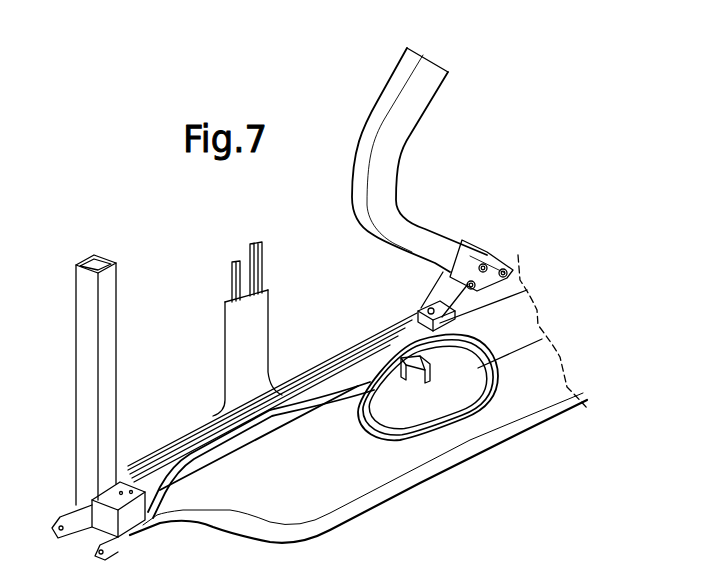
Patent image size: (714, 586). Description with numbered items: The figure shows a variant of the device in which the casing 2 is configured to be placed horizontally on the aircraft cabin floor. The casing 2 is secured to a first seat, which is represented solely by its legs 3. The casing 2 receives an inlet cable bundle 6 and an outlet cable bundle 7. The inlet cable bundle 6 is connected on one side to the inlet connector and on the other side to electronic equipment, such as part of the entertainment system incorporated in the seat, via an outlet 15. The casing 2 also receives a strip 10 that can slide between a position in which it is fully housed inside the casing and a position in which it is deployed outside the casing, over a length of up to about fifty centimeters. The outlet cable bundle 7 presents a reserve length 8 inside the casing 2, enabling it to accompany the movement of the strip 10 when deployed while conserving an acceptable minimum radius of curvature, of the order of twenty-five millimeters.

The casing 2 is at (322, 500).
The legs 3 is at (108, 295).
The inlet cable bundle 6 is at (170, 497).
The outlet cable bundle 7 is at (400, 430).
The reserve length 8 is at (447, 433).
The strip 10 is at (523, 312).
The outlet 15 is at (257, 322).